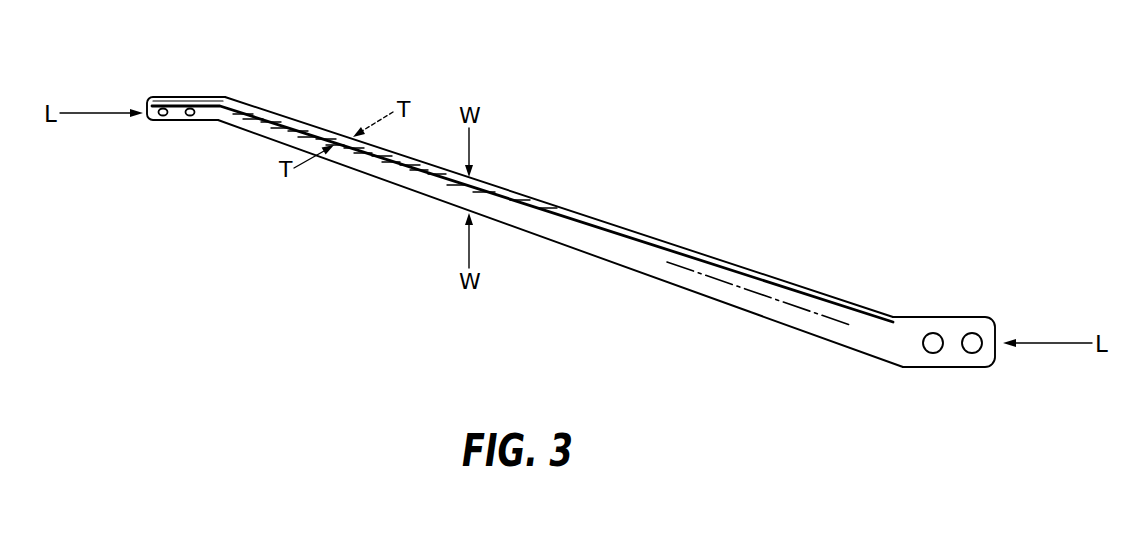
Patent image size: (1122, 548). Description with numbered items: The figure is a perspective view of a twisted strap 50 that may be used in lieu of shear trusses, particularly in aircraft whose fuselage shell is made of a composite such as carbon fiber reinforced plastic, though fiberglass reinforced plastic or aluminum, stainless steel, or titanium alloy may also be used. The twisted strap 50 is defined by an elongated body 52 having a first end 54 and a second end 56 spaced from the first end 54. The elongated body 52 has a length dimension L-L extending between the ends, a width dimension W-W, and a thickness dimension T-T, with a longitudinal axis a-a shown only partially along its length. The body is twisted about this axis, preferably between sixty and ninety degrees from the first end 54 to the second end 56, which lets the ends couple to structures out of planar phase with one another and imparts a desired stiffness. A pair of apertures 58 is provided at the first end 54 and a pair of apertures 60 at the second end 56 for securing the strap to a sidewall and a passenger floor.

The twisted strap 50 is at (657, 168).
The elongated body 52 is at (596, 243).
The first end 54 is at (213, 101).
The second end 56 is at (952, 327).
The apertures 58 is at (190, 116).
The apertures 60 is at (972, 351).